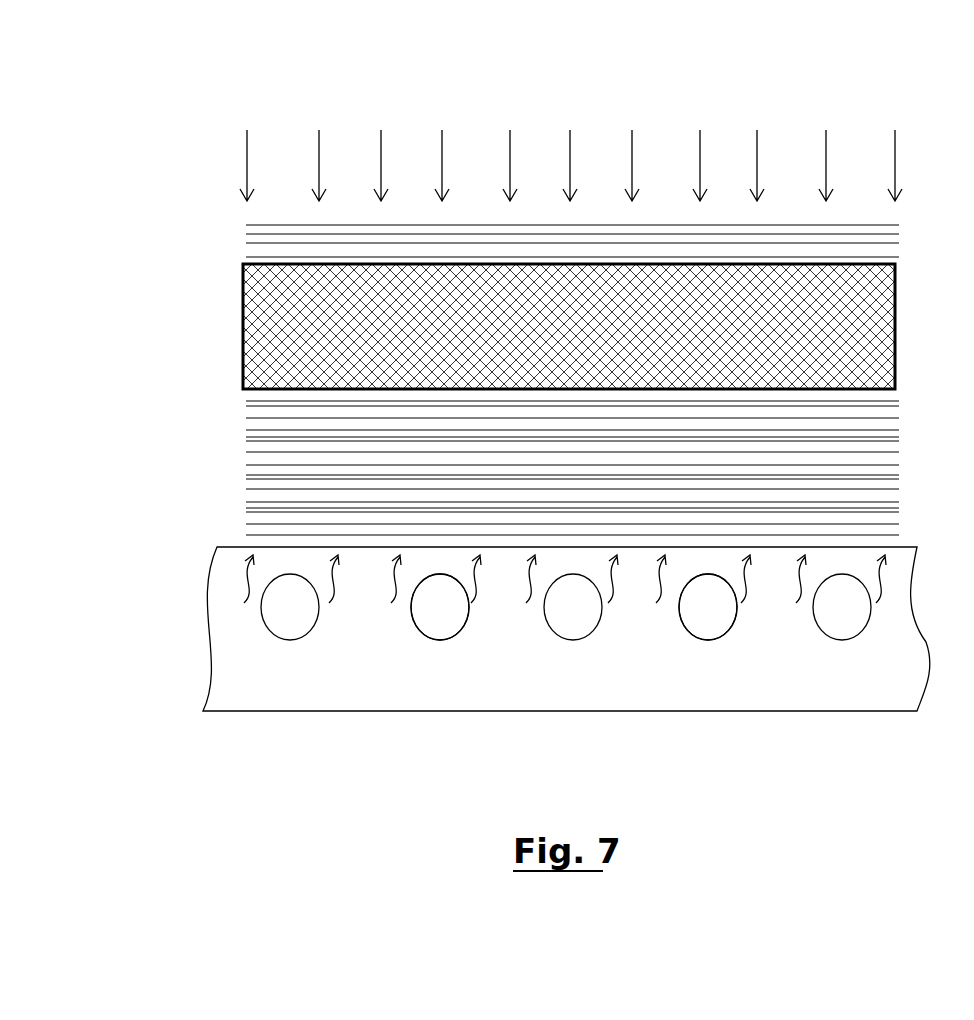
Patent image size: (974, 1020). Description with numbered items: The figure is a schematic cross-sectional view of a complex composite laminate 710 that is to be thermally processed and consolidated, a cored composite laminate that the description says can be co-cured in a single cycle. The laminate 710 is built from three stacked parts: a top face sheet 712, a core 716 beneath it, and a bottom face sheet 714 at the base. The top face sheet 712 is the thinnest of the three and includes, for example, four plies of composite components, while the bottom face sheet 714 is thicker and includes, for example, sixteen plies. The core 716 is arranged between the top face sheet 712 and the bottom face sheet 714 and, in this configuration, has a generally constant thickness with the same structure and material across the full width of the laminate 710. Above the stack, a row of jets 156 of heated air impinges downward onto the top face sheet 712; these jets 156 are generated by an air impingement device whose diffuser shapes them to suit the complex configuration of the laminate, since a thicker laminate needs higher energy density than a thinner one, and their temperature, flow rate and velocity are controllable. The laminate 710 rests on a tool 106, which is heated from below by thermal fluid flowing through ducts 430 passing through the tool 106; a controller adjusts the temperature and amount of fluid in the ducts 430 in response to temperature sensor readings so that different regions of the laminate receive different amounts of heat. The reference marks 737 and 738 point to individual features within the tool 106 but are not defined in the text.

The jets of heated air 156 is at (900, 107).
The complex composite laminate 710 is at (110, 222).
The top face sheet 712 is at (213, 227).
The core 716 is at (213, 264).
The bottom face sheet 714 is at (213, 389).
The tool 106 is at (222, 618).
The ducts 430 is at (420, 628).
The cell 737 is at (470, 608).
The cell 738 is at (742, 599).